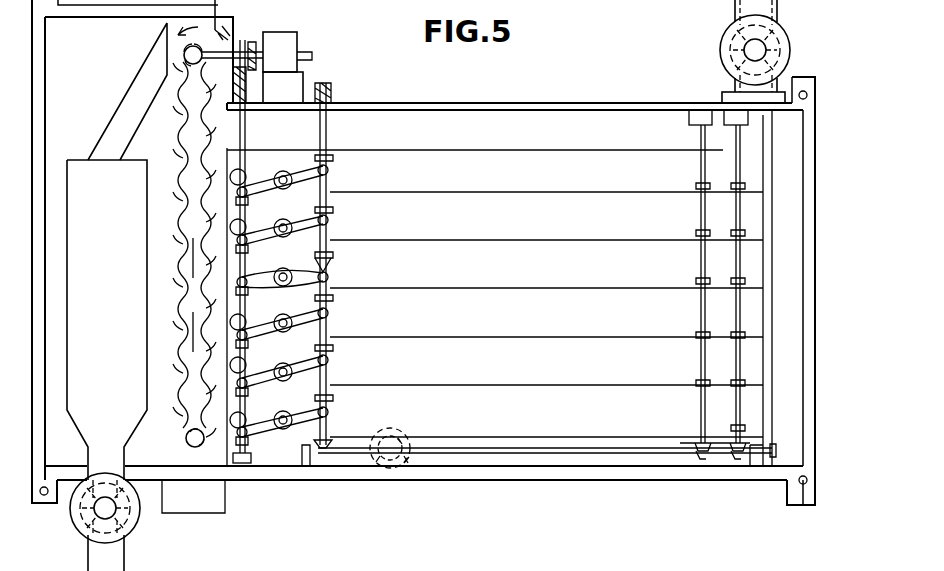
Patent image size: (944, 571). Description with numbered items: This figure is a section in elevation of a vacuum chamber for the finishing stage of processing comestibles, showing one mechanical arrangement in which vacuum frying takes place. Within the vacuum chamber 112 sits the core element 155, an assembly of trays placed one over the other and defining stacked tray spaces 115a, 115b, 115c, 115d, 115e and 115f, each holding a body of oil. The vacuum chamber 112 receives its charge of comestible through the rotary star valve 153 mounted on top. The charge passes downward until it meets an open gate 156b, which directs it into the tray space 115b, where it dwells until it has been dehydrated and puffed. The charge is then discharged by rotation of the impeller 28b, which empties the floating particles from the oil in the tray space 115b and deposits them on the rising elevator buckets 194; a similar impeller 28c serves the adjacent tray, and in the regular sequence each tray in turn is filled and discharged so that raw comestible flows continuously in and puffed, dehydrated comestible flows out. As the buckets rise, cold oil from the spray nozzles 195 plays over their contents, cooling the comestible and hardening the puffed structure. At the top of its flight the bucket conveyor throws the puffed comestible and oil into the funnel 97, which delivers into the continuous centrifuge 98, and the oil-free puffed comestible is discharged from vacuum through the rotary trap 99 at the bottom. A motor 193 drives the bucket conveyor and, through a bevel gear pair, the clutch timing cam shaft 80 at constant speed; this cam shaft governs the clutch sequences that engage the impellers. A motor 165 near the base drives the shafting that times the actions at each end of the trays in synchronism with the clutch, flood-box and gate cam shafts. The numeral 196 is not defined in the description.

The impeller 28b is at (252, 217).
The impeller 28c is at (252, 266).
The clutch timing cam shaft 80 is at (244, 157).
The funnel 97 is at (133, 88).
The continuous centrifuge 98 is at (107, 320).
The rotary trap 99 is at (134, 533).
The vacuum chamber 112 is at (541, 103).
The tray space 115a is at (546, 180).
The tray space 115b is at (546, 223).
The tray space 115c is at (546, 274).
The tray space 115d is at (546, 324).
The tray space 115e is at (546, 374).
The tray space 115f is at (546, 423).
The rotary star valve 153 is at (790, 52).
The core element 155 is at (566, 150).
The gate 156b is at (742, 227).
The motor 165 is at (407, 466).
The motor 193 is at (283, 32).
The elevator buckets 194 is at (207, 440).
The spray nozzles 195 is at (172, 36).
The drive shaft 196 is at (243, 55).